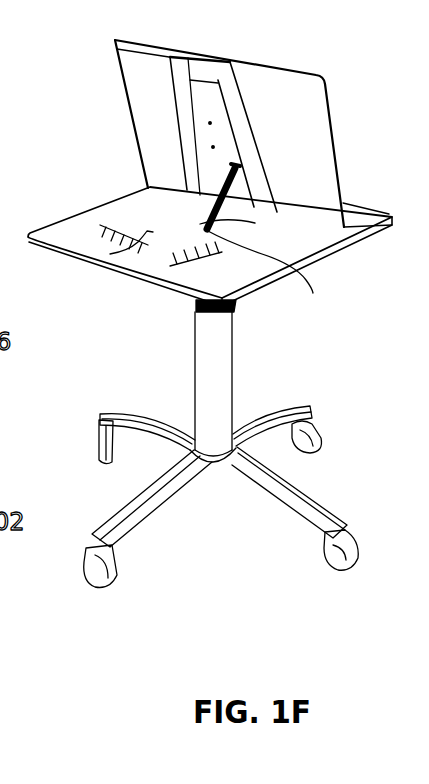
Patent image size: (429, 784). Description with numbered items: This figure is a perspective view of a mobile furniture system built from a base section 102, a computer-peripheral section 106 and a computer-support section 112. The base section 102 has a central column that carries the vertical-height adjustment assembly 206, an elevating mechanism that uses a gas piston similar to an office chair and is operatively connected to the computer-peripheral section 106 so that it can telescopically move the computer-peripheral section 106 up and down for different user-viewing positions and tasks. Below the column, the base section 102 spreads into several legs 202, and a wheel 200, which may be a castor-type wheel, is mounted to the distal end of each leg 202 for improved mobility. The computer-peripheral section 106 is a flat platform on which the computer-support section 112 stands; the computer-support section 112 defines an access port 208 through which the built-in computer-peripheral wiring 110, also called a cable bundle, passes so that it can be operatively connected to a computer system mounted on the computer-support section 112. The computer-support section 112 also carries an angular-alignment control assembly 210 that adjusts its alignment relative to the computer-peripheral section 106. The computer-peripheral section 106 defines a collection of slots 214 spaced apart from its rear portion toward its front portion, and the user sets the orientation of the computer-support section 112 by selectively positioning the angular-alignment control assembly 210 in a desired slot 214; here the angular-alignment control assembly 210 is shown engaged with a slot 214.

The base section 102 is at (233, 352).
The computer-peripheral section 106 is at (352, 238).
The built-in computer-peripheral wiring 110 is at (272, 282).
The computer-support section 112 is at (128, 51).
The wheel 200 is at (100, 465).
The leg 202 is at (128, 522).
The vertical-height adjustment assembly 206 is at (196, 303).
The access port 208 is at (215, 170).
The angular-alignment control assembly 210 is at (178, 133).
The slot 214 is at (112, 254).